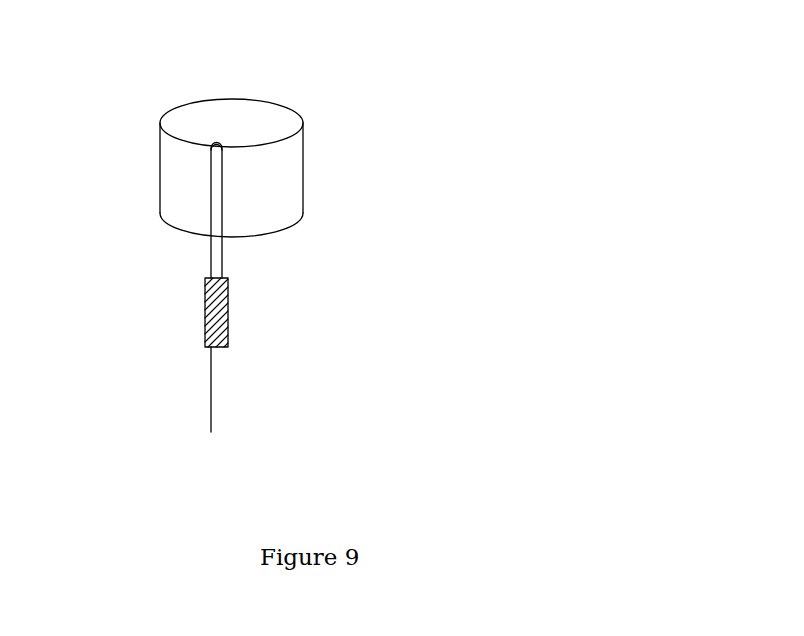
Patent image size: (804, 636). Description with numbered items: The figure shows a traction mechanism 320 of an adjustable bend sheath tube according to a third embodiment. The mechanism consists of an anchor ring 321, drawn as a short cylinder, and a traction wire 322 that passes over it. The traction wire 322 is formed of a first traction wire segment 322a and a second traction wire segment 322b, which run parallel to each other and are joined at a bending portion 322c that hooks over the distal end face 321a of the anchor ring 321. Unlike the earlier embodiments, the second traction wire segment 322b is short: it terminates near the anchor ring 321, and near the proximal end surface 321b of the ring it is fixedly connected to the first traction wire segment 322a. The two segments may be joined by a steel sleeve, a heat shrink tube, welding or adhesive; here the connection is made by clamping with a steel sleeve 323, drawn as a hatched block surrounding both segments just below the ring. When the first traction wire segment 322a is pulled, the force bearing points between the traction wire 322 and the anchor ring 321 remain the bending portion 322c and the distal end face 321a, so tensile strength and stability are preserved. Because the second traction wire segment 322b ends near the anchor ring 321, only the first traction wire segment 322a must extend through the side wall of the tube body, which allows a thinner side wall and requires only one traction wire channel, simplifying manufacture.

The traction mechanism 320 is at (348, 97).
The anchor ring 321 is at (125, 215).
The distal end face 321a is at (278, 143).
The proximal end surface 321b is at (275, 236).
The traction wire 322 is at (262, 370).
The first traction wire segment 322a is at (210, 375).
The second traction wire segment 322b is at (210, 262).
The bending portion 322c is at (217, 144).
The steel sleeve 323 is at (228, 311).